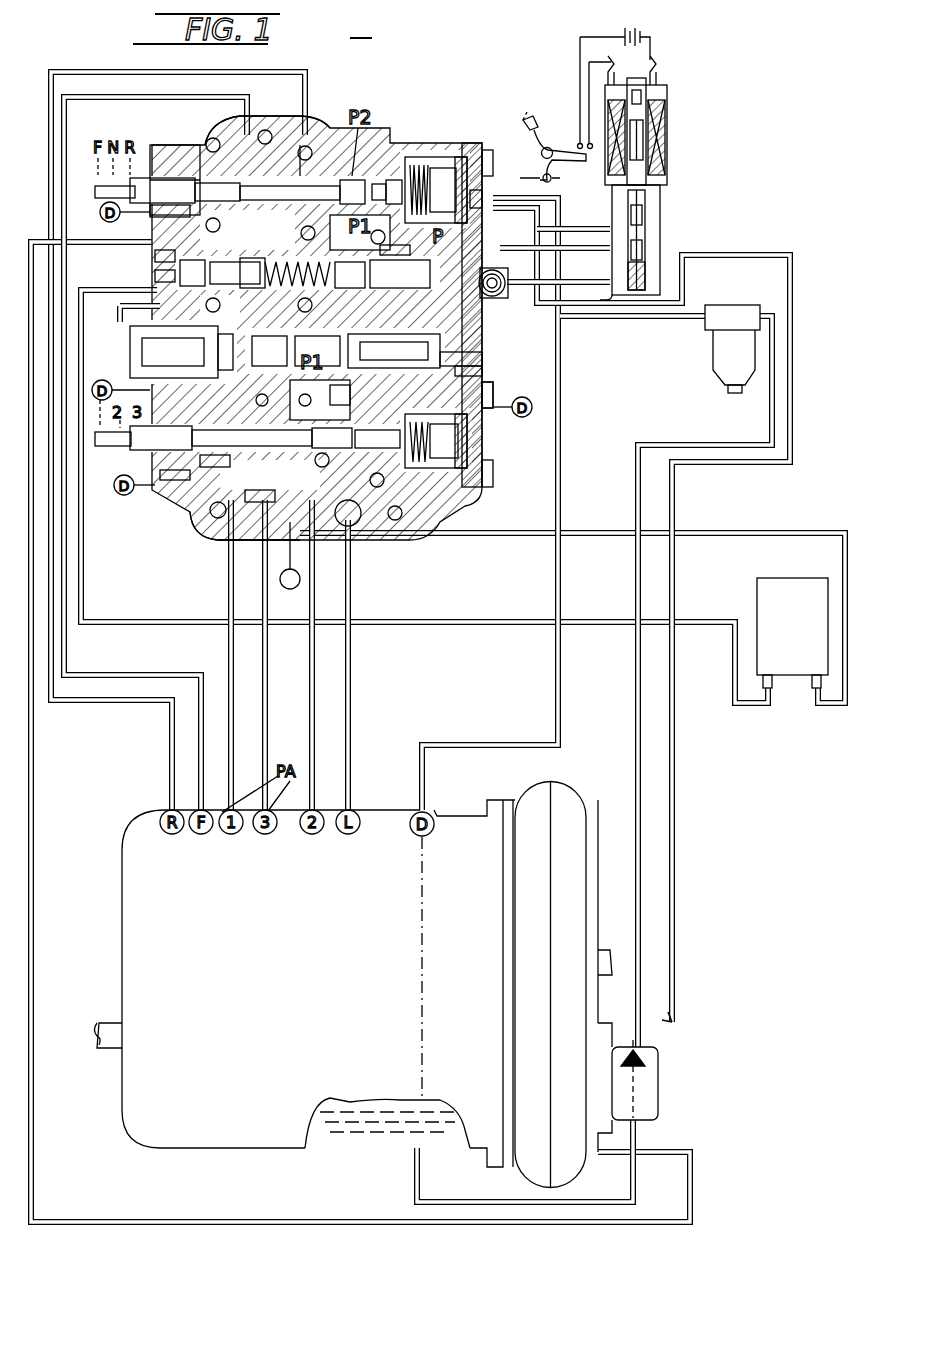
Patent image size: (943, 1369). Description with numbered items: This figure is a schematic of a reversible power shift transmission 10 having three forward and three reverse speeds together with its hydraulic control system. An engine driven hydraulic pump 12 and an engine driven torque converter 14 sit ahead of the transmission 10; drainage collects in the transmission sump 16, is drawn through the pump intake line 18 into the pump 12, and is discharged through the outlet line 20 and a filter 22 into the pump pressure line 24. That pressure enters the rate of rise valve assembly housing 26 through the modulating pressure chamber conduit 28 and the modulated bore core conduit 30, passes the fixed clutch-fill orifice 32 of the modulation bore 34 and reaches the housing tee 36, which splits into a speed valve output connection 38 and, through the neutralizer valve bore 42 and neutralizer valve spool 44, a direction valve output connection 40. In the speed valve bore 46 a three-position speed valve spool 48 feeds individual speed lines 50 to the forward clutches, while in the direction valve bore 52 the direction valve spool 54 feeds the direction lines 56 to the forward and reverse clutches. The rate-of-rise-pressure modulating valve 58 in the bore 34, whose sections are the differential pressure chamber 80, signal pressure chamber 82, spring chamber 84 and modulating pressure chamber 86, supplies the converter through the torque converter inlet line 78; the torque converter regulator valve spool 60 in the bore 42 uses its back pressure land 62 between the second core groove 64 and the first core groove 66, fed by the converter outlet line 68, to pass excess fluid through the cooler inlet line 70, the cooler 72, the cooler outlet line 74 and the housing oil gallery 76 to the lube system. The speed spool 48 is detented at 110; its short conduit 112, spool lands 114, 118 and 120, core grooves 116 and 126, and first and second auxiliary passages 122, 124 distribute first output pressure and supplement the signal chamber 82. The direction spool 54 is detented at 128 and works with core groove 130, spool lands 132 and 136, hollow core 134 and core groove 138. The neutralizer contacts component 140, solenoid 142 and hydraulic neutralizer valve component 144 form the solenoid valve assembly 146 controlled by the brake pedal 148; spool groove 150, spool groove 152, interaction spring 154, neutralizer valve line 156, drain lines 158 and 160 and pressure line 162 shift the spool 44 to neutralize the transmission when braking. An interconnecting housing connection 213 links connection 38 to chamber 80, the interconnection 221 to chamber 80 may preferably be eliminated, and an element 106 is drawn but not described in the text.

The transmission 10 is at (380, 818).
The hydraulic pump 12 is at (660, 1093).
The torque converter 14 is at (567, 800).
The transmission sump 16 is at (337, 1130).
The pump intake line 18 is at (631, 1176).
The outlet line 20 is at (641, 1040).
The filter 22 is at (720, 350).
The pump pressure line 24 is at (705, 320).
The rate of rise valve assembly housing 26 is at (450, 488).
The modulating pressure chamber conduit 28 is at (492, 268).
The modulated bore core conduit 30 is at (345, 350).
The clutch-fill orifice 32 is at (378, 264).
The rate of rise valve assembly modulation bore 34 is at (478, 355).
The housing tee 36 is at (305, 286).
The speed valve output connection 38 is at (470, 372).
The direction valve output connection 40 is at (376, 150).
The neutralizer valve bore 42 is at (397, 160).
The neutralizer valve spool 44 is at (481, 218).
The speed valve bore 46 is at (196, 522).
The speed valve spool 48 is at (323, 462).
The speed lines 50 is at (312, 660).
The direction valve bore 52 is at (263, 130).
The direction valve spool 54 is at (197, 187).
The direction lines 56 is at (298, 80).
The rate-of-rise-pressure modulating valve 58 is at (445, 362).
The torque converter regulator valve spool 60 is at (205, 259).
The back pressure land 62 is at (188, 280).
The second core groove 64 is at (258, 289).
The first core groove 66 is at (188, 258).
The converter outlet line 68 is at (80, 1215).
The cooler inlet line 70 is at (475, 622).
The hydraulic torque converter cooler 72 is at (768, 600).
The cooler outlet line 74 is at (590, 530).
The housing oil gallery 76 is at (330, 556).
The torque converter inlet line 78 is at (776, 278).
The differential pressure chamber 80 is at (152, 338).
The signal pressure chamber 82 is at (142, 352).
The spring chamber 84 is at (310, 300).
The modulating pressure chamber 86 is at (480, 384).
The spool land 106 is at (345, 362).
The detent 110 is at (448, 444).
The short conduit 112 is at (138, 455).
The spool land 114 is at (173, 480).
The core groove 116 is at (366, 482).
The spool land 118 is at (256, 504).
The spool land 120 is at (203, 477).
The first auxiliary passage 122 is at (175, 426).
The second auxiliary passage 124 is at (220, 467).
The core groove 126 is at (216, 546).
The detent 128 is at (418, 170).
The core groove 130 is at (308, 135).
The spool land 132 is at (235, 180).
The hollow core 134 is at (170, 215).
The spool land 136 is at (312, 150).
The core groove 138 is at (340, 180).
The transmission neutralizer contacts component 140 is at (578, 141).
The electric neutralizer valve solenoid 142 is at (636, 160).
The hydraulic neutralizer valve component 144 is at (648, 283).
The three-way cartridge solenoid valve assembly 146 is at (686, 161).
The vehicle brake pedal 148 is at (540, 122).
The spool groove 150 is at (392, 262).
The spool groove 152 is at (640, 232).
The interaction spring 154 is at (262, 250).
The neutralizer valve line 156 is at (580, 254).
The drain line 158 is at (538, 222).
The drain line 160 is at (562, 696).
The pressure line 162 is at (605, 226).
The interconnecting housing connection 213 is at (330, 392).
The interconnection 221 is at (176, 482).